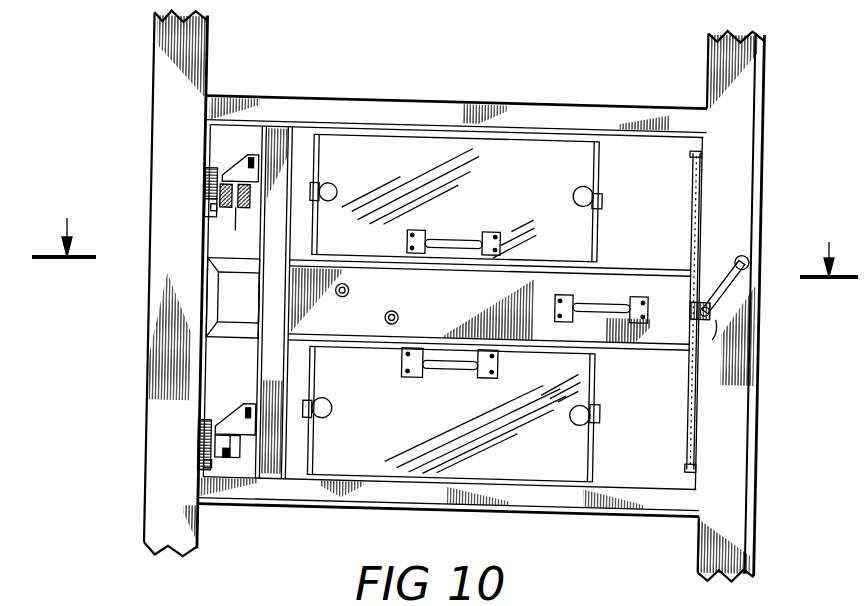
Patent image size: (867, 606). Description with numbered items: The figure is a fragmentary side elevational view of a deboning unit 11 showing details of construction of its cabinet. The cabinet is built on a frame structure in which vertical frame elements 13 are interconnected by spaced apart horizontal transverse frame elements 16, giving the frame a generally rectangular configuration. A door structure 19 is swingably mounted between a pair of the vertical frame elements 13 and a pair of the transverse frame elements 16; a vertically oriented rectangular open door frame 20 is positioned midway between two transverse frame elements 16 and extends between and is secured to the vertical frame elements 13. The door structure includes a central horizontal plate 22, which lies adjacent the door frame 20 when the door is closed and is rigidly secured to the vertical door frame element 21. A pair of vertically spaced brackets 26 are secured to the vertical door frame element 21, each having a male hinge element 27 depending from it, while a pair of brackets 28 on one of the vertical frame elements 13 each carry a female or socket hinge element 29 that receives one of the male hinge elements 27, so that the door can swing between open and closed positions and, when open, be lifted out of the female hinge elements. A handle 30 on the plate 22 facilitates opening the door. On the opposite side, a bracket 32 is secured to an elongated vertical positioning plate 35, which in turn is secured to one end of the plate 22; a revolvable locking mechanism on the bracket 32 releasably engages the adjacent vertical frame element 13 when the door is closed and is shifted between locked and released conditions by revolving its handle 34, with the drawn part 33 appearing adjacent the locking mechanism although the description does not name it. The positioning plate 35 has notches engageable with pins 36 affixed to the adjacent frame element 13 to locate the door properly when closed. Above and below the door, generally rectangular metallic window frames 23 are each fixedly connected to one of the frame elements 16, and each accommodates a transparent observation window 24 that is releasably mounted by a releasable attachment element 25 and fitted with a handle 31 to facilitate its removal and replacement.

The deboning unit 11 is at (445, 270).
The vertical frame element 13 is at (154, 418).
The horizontal transverse frame element 16 is at (529, 98).
The door structure 19 is at (647, 262).
The door frame 20 is at (236, 344).
The vertical door frame element 21 is at (262, 306).
The central horizontal plate 22 is at (420, 303).
The window frame 23 is at (595, 148).
The observation window 24 is at (437, 150).
The releasable attachment element 25 is at (331, 193).
The bracket 26 is at (240, 172).
The male hinge element 27 is at (240, 231).
The bracket 28 is at (208, 214).
The female hinge element 29 is at (217, 196).
The handle 30 is at (606, 298).
The handle 31 is at (452, 240).
The bracket 32 is at (690, 310).
The lever end 33 is at (719, 342).
The handle 34 is at (739, 248).
The vertical positioning plate 35 is at (691, 379).
The pin 36 is at (688, 162).